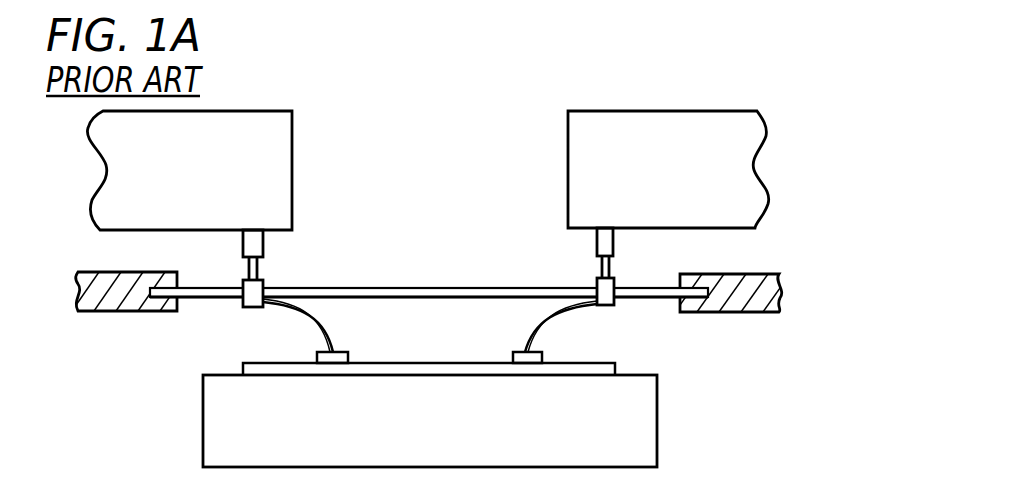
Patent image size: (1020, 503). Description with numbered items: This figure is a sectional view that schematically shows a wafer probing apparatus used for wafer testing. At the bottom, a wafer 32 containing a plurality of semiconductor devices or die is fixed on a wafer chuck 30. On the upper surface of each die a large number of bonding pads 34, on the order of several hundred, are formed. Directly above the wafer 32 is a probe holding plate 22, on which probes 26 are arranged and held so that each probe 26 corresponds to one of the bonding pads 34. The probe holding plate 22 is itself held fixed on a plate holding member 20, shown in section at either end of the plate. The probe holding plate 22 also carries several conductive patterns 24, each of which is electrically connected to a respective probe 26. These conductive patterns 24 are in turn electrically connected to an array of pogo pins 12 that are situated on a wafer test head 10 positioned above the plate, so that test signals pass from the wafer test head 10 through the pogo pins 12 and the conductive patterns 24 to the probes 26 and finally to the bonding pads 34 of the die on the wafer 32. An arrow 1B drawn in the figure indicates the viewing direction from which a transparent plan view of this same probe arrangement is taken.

The arrow 1B is at (420, 186).
The wafer test head 10 is at (698, 128).
The pogo pins 12 is at (598, 250).
The plate holding member 20 is at (781, 290).
The probe holding plate 22 is at (360, 286).
The conductive patterns 24 is at (617, 284).
The probes 26 is at (541, 318).
The wafer chuck 30 is at (660, 425).
The wafer 32 is at (619, 368).
The bonding pads 34 is at (546, 360).